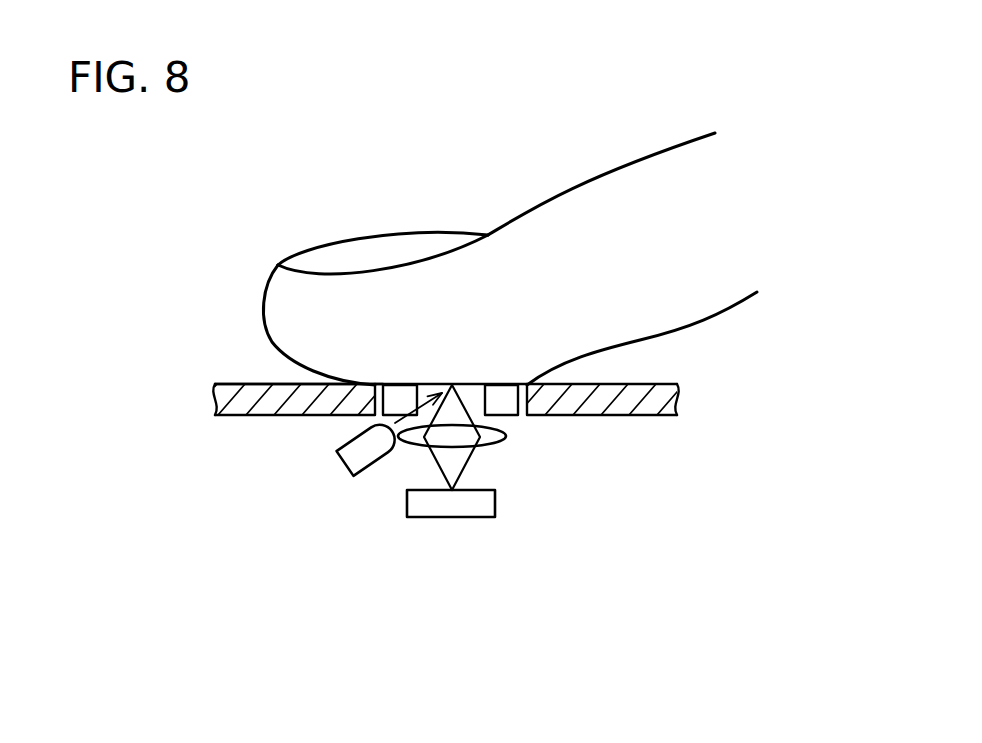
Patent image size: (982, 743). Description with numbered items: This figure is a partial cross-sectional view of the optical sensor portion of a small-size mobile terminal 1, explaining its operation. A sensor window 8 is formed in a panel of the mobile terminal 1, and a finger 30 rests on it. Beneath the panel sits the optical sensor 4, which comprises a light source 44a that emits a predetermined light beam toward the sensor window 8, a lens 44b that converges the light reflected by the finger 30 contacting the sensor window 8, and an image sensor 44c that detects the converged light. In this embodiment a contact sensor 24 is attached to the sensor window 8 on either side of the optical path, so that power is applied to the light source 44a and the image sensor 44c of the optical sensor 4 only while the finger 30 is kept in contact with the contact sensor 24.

The mobile terminal 1 is at (268, 400).
The optical sensor 4 is at (442, 507).
The sensor window 8 is at (375, 402).
The contact sensor 24 is at (403, 398).
The finger 30 is at (518, 298).
The light source 44a is at (365, 450).
The lens 44b is at (485, 437).
The image sensor 44c is at (451, 534).